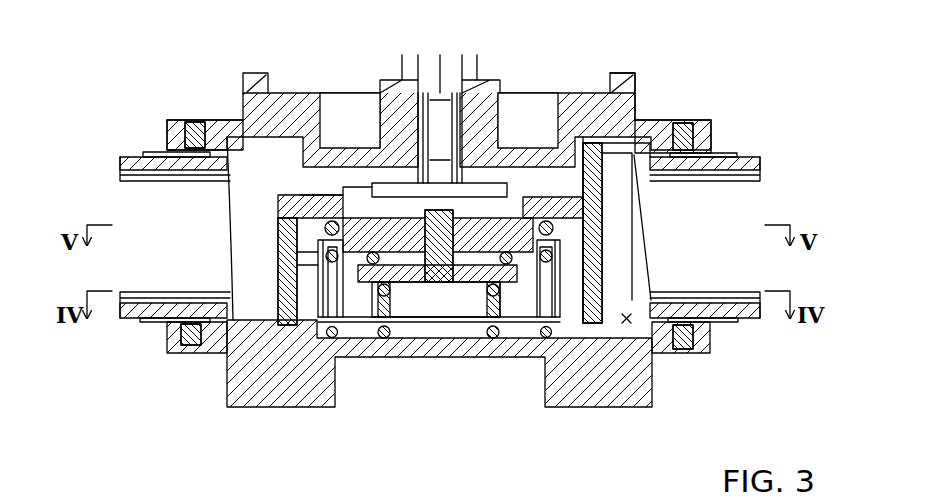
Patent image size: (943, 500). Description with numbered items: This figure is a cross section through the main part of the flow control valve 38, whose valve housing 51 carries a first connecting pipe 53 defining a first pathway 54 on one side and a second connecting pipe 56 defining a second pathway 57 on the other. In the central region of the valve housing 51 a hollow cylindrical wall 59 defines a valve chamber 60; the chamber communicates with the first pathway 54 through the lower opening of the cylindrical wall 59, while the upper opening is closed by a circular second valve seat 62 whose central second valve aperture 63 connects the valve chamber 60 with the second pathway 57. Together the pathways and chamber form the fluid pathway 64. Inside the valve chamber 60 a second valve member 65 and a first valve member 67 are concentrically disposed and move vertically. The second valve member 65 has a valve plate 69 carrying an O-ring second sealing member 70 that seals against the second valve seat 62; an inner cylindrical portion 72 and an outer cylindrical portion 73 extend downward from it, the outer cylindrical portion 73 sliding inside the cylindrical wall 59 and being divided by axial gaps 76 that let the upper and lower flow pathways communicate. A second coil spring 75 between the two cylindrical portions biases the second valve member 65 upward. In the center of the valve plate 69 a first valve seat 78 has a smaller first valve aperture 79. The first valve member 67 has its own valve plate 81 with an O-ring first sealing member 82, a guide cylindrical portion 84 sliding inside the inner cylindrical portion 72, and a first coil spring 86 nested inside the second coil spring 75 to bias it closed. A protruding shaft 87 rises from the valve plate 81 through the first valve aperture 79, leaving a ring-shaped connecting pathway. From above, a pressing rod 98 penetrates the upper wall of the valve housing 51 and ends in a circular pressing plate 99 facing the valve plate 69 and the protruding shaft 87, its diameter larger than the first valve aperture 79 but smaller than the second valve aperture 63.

The flow control valve 38 is at (692, 55).
The valve housing 51 is at (636, 95).
The first connecting pipe 53 is at (730, 153).
The first pathway 54 is at (738, 300).
The second connecting pipe 56 is at (132, 158).
The second pathway 57 is at (138, 290).
The cylindrical wall 59 is at (283, 243).
The valve chamber 60 is at (303, 320).
The second valve seat 62 is at (317, 210).
The second valve aperture 63 is at (358, 150).
The fluid pathway 64 is at (628, 326).
The second valve member 65 is at (545, 118).
The first valve member 67 is at (440, 262).
The valve plate 69 is at (365, 190).
The second sealing member 70 is at (583, 253).
The inner cylindrical portion 72 is at (527, 300).
The outer cylindrical portion 73 is at (556, 300).
The second coil spring 75 is at (557, 250).
The gaps 76 is at (322, 230).
The first valve seat 78 is at (395, 183).
The first valve aperture 79 is at (420, 262).
The valve plate 81 is at (456, 262).
The first sealing member 82 is at (315, 253).
The guide cylindrical portion 84 is at (362, 312).
The first coil spring 86 is at (490, 322).
The protruding shaft 87 is at (468, 178).
The pressing rod 98 is at (441, 120).
The pressing plate 99 is at (485, 205).